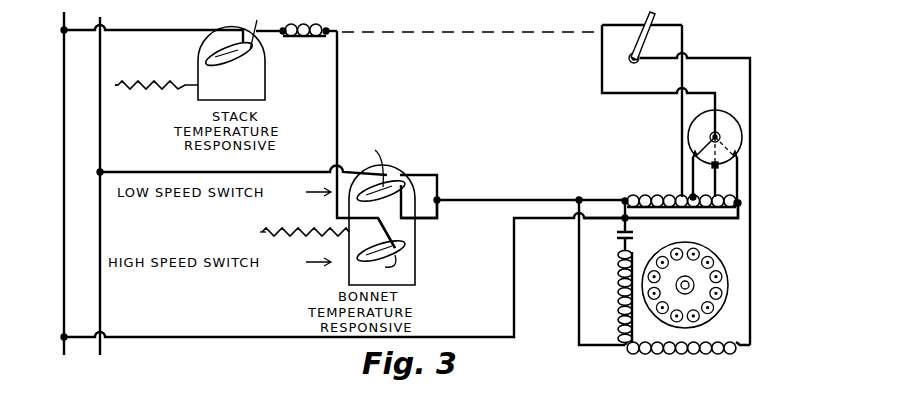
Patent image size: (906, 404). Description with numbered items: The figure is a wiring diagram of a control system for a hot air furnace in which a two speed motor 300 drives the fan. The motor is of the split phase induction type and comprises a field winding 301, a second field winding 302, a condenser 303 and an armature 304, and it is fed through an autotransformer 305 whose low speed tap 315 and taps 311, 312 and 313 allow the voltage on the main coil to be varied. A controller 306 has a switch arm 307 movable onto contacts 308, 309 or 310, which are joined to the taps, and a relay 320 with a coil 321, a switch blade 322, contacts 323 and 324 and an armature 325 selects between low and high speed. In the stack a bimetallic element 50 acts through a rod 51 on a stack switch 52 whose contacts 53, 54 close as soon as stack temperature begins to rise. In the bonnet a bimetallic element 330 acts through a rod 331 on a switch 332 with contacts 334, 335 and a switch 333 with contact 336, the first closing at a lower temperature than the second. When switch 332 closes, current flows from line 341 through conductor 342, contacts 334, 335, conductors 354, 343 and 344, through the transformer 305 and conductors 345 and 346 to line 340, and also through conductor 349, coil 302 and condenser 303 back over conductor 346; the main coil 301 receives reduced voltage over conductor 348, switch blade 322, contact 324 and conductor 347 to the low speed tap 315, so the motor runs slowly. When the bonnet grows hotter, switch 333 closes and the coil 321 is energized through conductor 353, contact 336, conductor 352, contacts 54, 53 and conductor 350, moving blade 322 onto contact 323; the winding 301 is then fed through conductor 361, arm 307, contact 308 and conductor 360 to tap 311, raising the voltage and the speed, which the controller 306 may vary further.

The bimetallic element 50 is at (146, 82).
The rod 51 is at (118, 84).
The stack switch 52 is at (244, 68).
The contact 53 is at (248, 44).
The contact 54 is at (267, 26).
The two speed motor 300 is at (762, 377).
The field winding 301 is at (742, 352).
The second field winding 302 is at (616, 298).
The condenser 303 is at (618, 232).
The armature 304 is at (730, 275).
The autotransformer 305 is at (651, 189).
The controller 306 is at (739, 115).
The switch arm 307 is at (691, 128).
The contact 308 is at (691, 149).
The contact 309 is at (690, 158).
The contact 310 is at (738, 154).
The tap 311 is at (695, 195).
The tap 312 is at (715, 199).
The tap 313 is at (742, 204).
The low speed tap 315 is at (684, 197).
The relay 320 is at (372, 28).
The coil 321 is at (314, 46).
The switch blade 322 is at (628, 52).
The contact 323 is at (626, 26).
The contact 324 is at (665, 26).
The armature 325 is at (514, 32).
The bimetallic element 330 is at (270, 239).
The rod 331 is at (260, 232).
The switch 332 is at (358, 171).
The switch 333 is at (405, 260).
The contact 334 is at (435, 247).
The contact 335 is at (400, 181).
The contact 336 is at (386, 236).
The line 340 is at (64, 207).
The line 341 is at (98, 218).
The conductor 342 is at (172, 172).
The conductor 343 is at (545, 195).
The conductor 344 is at (586, 193).
The conductor 345 is at (682, 224).
The conductor 346 is at (238, 337).
The conductor 347 is at (684, 72).
The conductor 348 is at (746, 54).
The conductor 349 is at (579, 284).
The conductor 350 is at (155, 24).
The conductor 352 is at (337, 122).
The conductor 353 is at (434, 222).
The conductor 354 is at (437, 196).
The conductor 360 is at (710, 167).
The conductor 361 is at (610, 93).